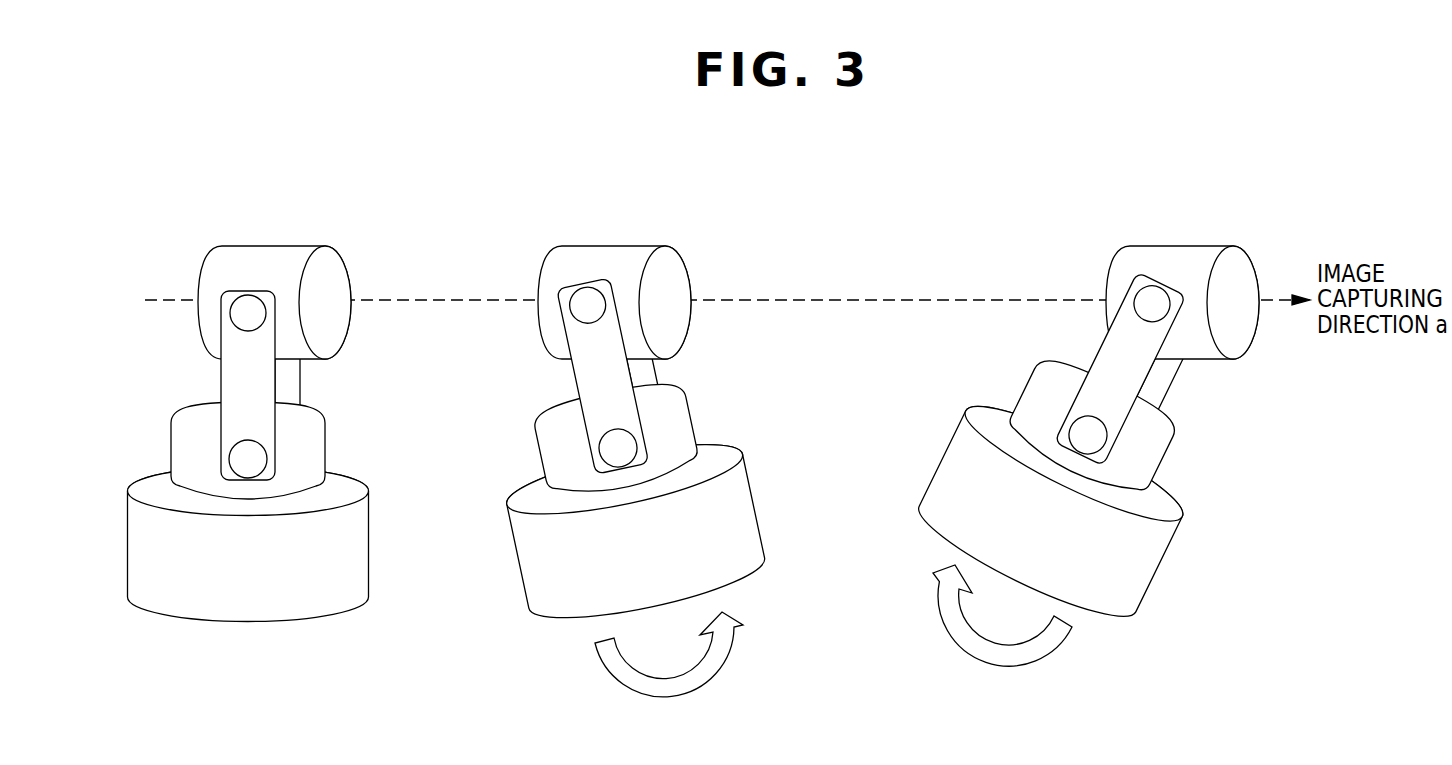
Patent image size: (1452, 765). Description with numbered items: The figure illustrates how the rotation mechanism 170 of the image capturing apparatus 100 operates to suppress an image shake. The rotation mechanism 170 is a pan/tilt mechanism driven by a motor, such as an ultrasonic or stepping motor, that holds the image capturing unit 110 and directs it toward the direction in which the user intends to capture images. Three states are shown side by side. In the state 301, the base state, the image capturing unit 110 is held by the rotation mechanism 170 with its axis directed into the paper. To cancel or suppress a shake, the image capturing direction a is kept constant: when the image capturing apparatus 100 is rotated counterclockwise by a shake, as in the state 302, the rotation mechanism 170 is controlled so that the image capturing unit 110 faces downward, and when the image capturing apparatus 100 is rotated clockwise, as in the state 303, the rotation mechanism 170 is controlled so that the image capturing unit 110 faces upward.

The image capturing apparatus 100 is at (369, 541).
The image capturing unit 110 is at (242, 246).
The rotation mechanism 170 is at (229, 313).
The state 301 is at (328, 211).
The state 302 is at (676, 211).
The state 303 is at (1236, 211).